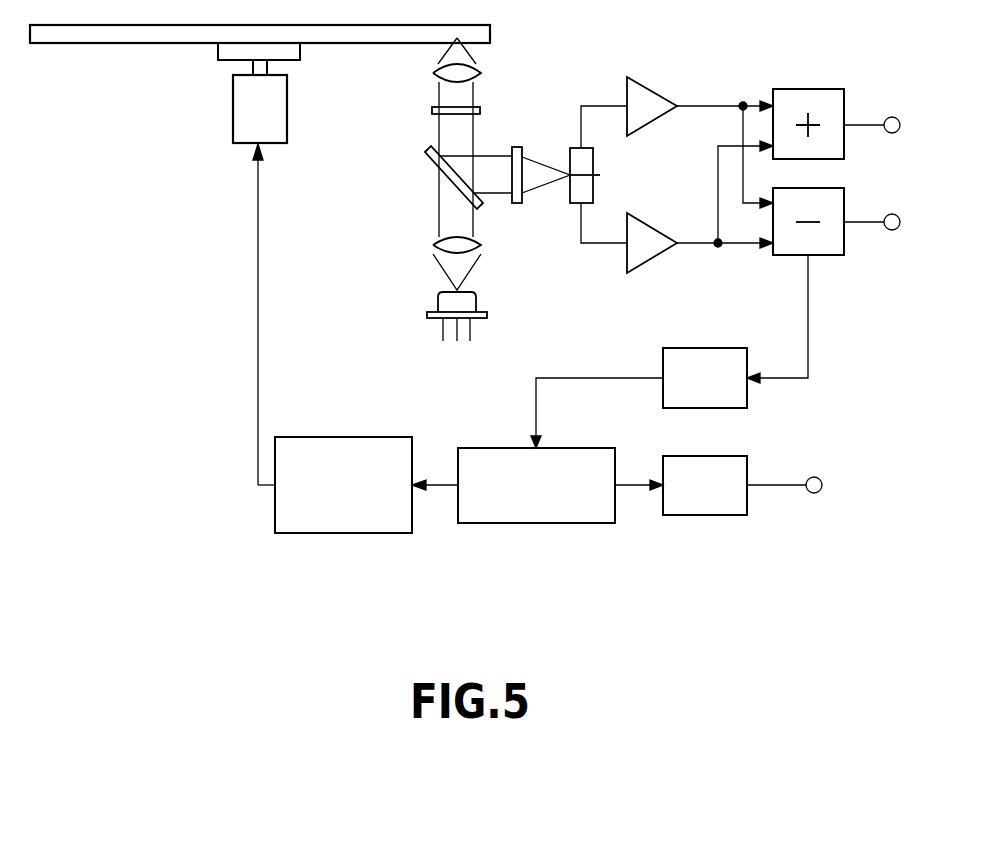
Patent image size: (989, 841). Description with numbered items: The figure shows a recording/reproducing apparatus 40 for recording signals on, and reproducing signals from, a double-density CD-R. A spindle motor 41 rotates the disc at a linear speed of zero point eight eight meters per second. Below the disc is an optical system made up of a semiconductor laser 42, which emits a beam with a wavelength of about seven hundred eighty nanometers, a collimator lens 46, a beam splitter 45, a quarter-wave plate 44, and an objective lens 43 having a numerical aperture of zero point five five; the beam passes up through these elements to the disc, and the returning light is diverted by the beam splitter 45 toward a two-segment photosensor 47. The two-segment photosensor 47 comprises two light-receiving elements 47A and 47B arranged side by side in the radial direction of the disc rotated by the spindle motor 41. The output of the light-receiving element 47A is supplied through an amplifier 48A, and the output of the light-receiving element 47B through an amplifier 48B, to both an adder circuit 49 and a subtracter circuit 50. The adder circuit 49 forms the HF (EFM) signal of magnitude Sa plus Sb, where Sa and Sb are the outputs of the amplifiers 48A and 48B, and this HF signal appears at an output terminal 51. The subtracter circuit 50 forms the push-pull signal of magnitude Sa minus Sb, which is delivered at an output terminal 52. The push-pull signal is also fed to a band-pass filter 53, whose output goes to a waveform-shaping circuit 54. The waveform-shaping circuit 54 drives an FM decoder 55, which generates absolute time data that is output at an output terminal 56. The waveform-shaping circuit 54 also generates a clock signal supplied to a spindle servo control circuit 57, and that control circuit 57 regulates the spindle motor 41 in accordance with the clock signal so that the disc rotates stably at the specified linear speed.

The recording/reproducing apparatus 40 is at (215, 340).
The spindle motor 41 is at (232, 108).
The semiconductor laser 42 is at (436, 299).
The objective lens 43 is at (432, 73).
The quarter-wave plate 44 is at (432, 110).
The beam splitter 45 is at (430, 158).
The collimator lens 46 is at (432, 246).
The two-segment photosensor 47 is at (609, 199).
The light-receiving element 47A is at (596, 166).
The light-receiving element 47B is at (596, 189).
The amplifier 48A is at (656, 86).
The amplifier 48B is at (655, 258).
The adder circuit 49 is at (806, 89).
The subtracter circuit 50 is at (826, 257).
The output terminal 51 is at (892, 117).
The output terminal 52 is at (892, 230).
The band-pass filter 53 is at (747, 395).
The waveform-shaping circuit 54 is at (582, 523).
The FM decoder 55 is at (722, 515).
The output terminal 56 is at (814, 493).
The spindle servo control circuit 57 is at (323, 437).